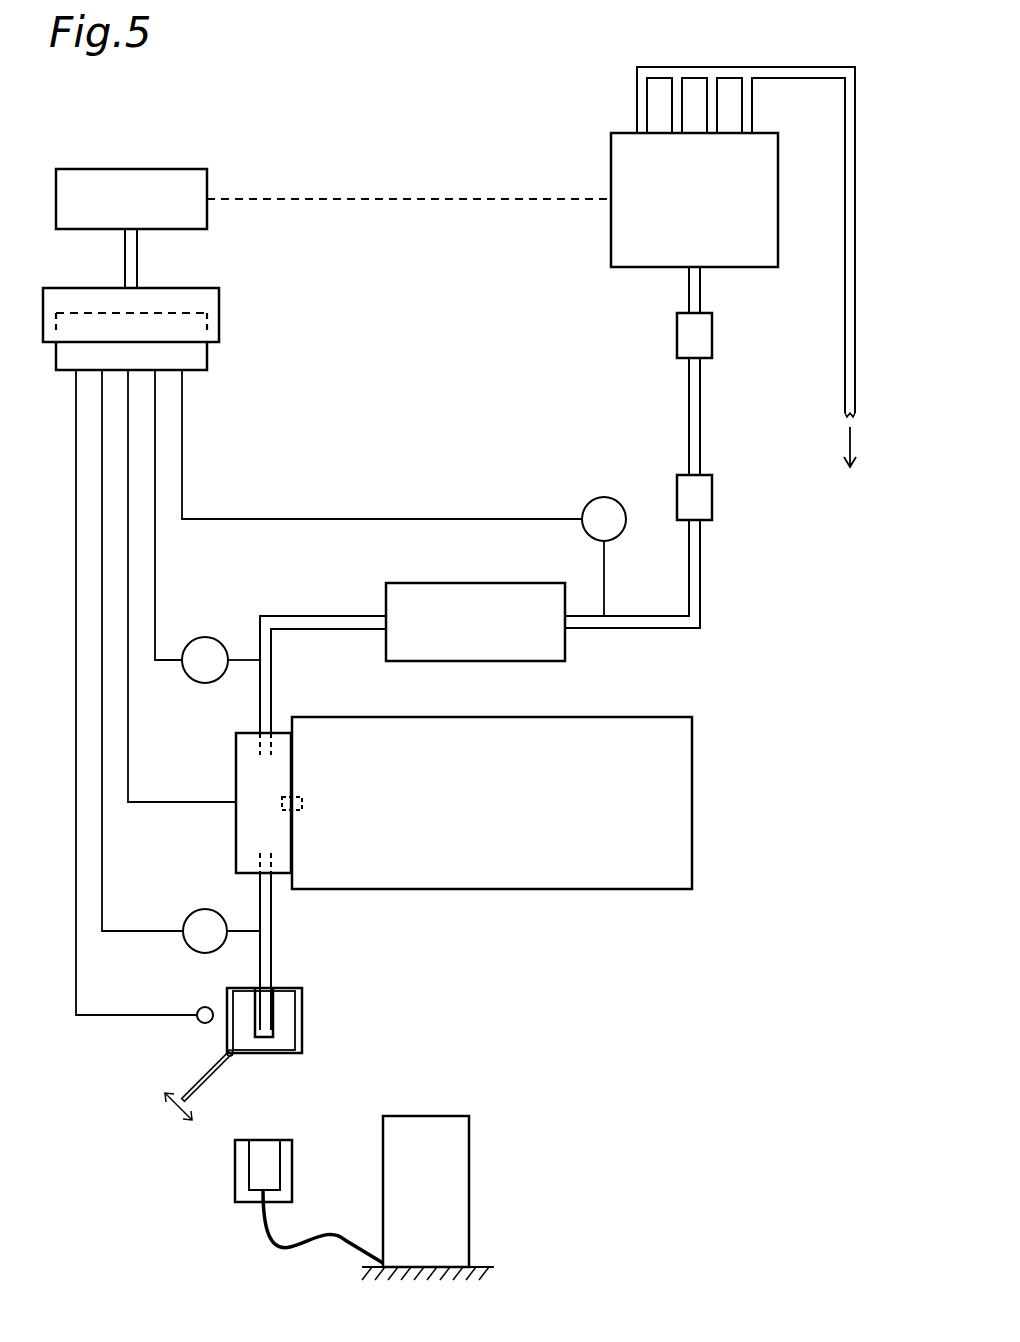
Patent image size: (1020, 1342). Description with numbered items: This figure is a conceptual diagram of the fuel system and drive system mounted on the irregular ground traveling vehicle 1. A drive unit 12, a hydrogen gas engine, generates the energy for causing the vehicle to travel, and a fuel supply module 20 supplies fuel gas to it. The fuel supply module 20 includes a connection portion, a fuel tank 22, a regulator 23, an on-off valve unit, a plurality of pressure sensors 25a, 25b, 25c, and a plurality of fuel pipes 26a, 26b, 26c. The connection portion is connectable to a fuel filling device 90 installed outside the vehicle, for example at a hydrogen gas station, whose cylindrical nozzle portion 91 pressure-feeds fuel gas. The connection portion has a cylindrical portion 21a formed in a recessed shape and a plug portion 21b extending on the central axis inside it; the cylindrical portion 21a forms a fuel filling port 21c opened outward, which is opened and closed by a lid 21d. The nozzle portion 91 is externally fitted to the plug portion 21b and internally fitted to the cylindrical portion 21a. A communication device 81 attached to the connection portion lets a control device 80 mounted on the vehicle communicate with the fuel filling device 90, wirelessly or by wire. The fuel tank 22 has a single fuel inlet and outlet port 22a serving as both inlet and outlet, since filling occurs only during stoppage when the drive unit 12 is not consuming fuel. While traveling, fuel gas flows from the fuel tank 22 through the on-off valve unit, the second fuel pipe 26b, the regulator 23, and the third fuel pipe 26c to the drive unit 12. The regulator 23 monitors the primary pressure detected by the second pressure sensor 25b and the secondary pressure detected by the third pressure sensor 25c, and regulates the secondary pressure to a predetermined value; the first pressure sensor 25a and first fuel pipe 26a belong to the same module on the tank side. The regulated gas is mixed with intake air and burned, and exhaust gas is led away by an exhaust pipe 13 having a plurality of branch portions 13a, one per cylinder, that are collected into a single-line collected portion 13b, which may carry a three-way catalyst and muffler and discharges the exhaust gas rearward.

The irregular ground traveling vehicle 1 is at (282, 76).
The drive unit 12 is at (615, 222).
The exhaust pipe 13 is at (612, 65).
The branch portions 13a is at (676, 100).
The collected portion 13b is at (845, 310).
The fuel supply module 20 is at (521, 321).
The cylindrical portion 21a is at (305, 996).
The plug portion 21b is at (265, 1018).
The fuel filling port 21c is at (290, 1053).
The lid 21d is at (220, 1067).
The fuel tank 22 is at (692, 860).
The fuel inlet and outlet port 22a is at (300, 800).
The regulator 23 is at (418, 590).
The first pressure sensor 25a is at (202, 908).
The second pressure sensor 25b is at (205, 637).
The third pressure sensor 25c is at (598, 497).
The first fuel pipe 26a is at (270, 950).
The second fuel pipe 26b is at (323, 620).
The third fuel pipe 26c is at (700, 597).
The control device 80 is at (186, 184).
The communication device 81 is at (200, 1005).
The fuel filling device 90 is at (465, 1097).
The nozzle portion 91 is at (293, 1152).